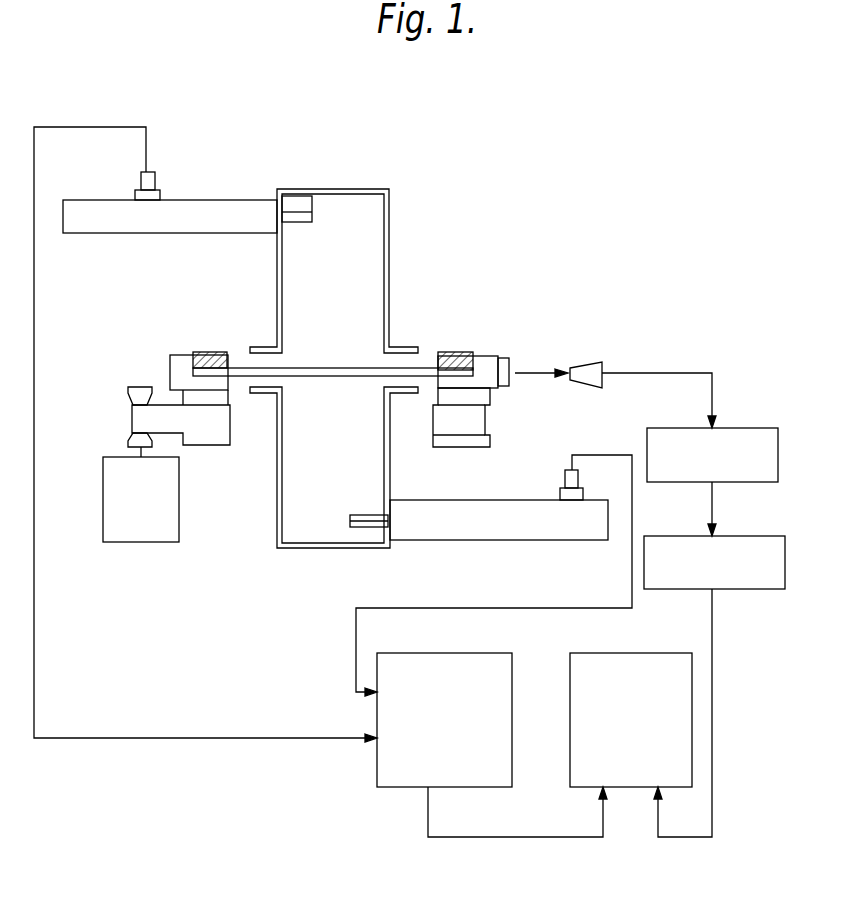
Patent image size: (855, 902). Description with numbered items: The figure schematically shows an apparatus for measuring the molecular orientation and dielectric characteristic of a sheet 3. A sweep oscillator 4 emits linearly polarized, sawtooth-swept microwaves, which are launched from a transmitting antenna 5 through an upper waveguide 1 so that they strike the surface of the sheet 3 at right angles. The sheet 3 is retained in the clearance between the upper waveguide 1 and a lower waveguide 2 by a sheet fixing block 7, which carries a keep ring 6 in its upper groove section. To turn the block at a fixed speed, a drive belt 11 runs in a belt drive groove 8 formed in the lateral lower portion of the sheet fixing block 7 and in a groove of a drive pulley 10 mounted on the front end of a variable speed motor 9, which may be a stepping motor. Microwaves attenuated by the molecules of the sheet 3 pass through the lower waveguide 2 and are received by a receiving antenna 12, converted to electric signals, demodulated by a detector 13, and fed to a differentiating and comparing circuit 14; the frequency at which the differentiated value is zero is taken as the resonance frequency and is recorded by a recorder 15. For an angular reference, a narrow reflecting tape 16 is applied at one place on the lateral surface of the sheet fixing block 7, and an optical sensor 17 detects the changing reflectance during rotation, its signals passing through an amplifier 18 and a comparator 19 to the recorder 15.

The upper waveguide 1 is at (391, 232).
The lower waveguide 2 is at (392, 478).
The sheet 3 is at (432, 355).
The sweep oscillator 4 is at (234, 200).
The transmitting antenna 5 is at (312, 210).
The keep ring 6 is at (210, 352).
The sheet fixing block 7 is at (177, 355).
The belt drive groove 8 is at (477, 434).
The variable speed motor 9 is at (128, 543).
The drive pulley 10 is at (138, 387).
The drive belt 11 is at (132, 412).
The receiving antenna 12 is at (357, 529).
The detector 13 is at (490, 541).
The differentiating and comparing circuit 14 is at (378, 790).
The recorder 15 is at (571, 789).
The reflecting tape 16 is at (504, 360).
The optical sensor 17 is at (595, 362).
The amplifier 18 is at (774, 427).
The comparator 19 is at (683, 590).